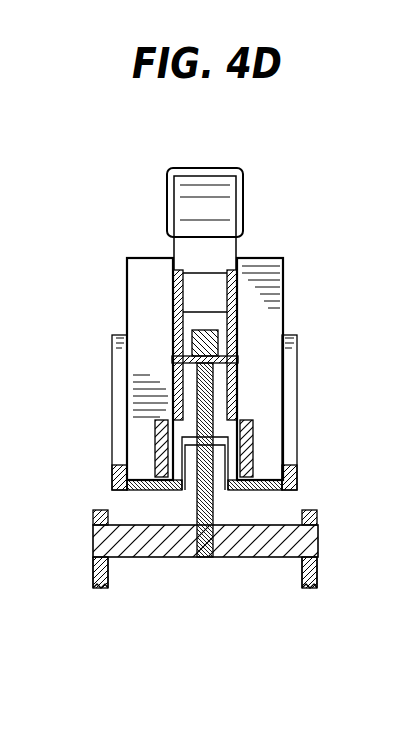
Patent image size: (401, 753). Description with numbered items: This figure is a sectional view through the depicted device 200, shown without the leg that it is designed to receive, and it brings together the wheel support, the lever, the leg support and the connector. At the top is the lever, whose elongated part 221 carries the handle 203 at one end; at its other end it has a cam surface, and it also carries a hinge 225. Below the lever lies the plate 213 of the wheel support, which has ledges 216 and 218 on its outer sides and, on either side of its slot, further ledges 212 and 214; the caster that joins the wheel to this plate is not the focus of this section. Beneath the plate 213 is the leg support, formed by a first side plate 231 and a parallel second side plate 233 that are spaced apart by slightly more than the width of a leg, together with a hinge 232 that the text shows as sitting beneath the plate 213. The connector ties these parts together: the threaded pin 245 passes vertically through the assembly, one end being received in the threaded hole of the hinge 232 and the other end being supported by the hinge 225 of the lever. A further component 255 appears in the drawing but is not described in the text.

The valve assembly 200 is at (146, 145).
The handle 203 is at (232, 165).
The plate 213 is at (268, 257).
The elongated part 221 is at (175, 296).
The hinge 225 is at (237, 362).
The ledge 216 is at (112, 388).
The ledge 218 is at (298, 408).
The ledge 212 is at (153, 436).
The ledge 214 is at (253, 456).
The bracket 255 is at (187, 483).
The threaded pin 245 is at (213, 517).
The first side plate 231 is at (92, 513).
The hinge 232 is at (175, 558).
The second side plate 233 is at (318, 580).